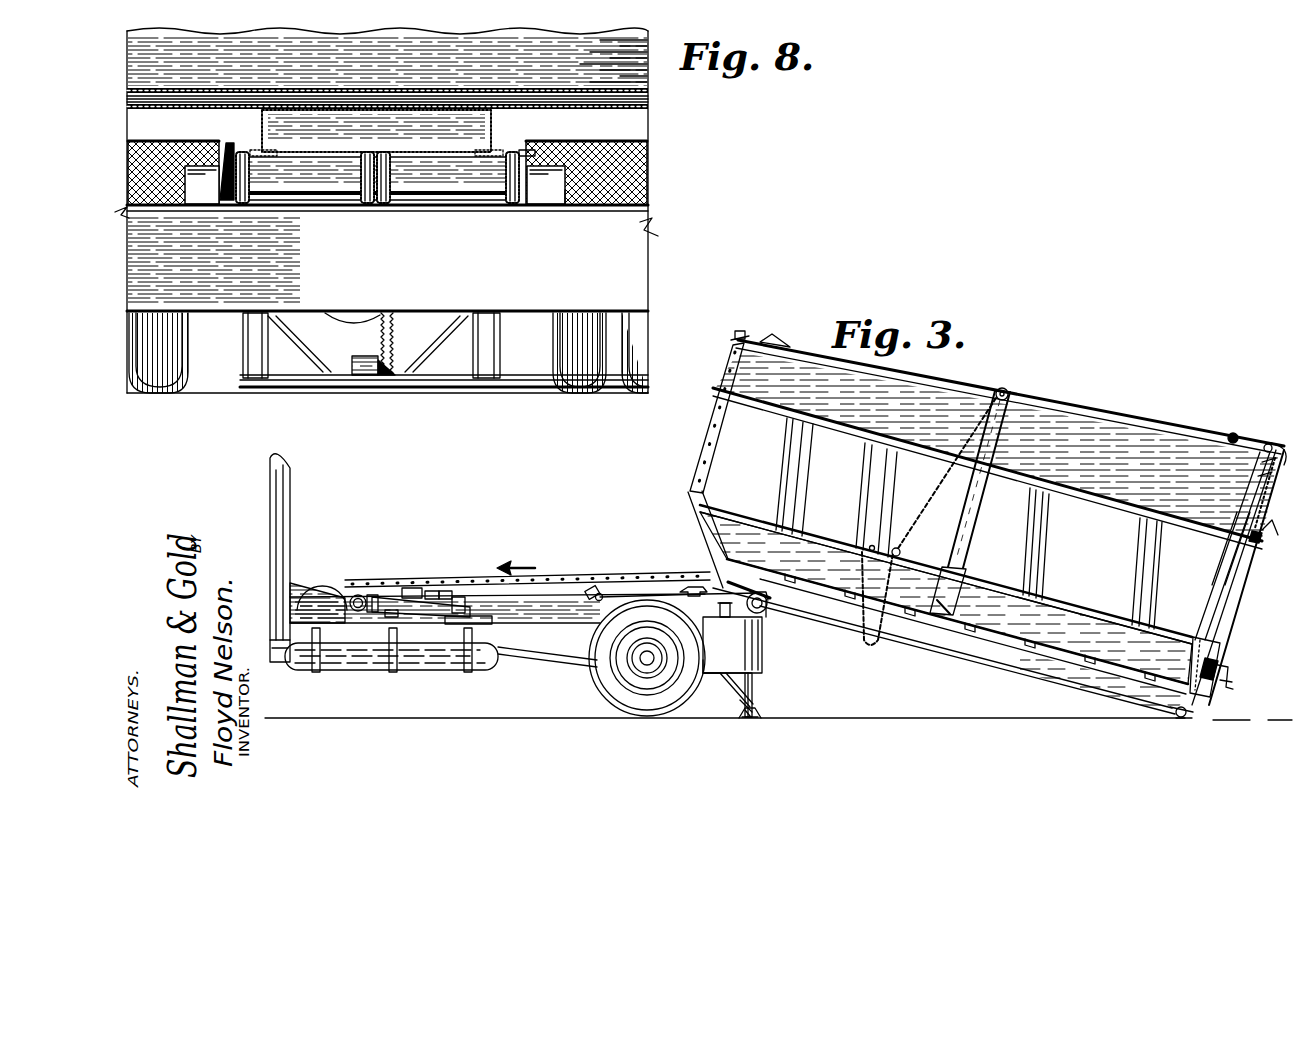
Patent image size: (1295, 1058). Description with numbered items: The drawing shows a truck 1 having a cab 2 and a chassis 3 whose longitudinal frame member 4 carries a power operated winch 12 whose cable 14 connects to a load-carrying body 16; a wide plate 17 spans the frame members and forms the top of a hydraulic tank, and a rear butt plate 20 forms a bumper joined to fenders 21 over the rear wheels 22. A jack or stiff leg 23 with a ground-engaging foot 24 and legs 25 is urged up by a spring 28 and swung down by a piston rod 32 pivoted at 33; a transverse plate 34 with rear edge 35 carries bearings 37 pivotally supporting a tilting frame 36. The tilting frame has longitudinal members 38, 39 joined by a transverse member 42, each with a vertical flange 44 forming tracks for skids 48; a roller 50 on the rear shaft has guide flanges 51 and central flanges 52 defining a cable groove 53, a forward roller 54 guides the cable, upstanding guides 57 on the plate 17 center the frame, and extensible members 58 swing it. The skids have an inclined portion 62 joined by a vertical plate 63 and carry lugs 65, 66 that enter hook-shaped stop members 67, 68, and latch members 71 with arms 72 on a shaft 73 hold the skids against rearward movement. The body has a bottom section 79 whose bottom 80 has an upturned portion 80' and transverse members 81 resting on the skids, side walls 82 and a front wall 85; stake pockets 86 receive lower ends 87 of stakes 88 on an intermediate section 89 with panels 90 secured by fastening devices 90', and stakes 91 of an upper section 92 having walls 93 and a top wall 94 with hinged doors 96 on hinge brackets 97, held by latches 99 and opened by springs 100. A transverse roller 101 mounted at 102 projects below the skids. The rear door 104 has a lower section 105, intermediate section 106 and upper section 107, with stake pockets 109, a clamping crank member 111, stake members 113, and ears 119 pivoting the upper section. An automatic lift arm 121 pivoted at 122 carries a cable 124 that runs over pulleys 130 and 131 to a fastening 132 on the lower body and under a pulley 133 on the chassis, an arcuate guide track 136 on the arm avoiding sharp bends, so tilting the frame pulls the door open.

In FIG. 3, the vehicle 1 is at (285, 670).
In FIG. 3, the cab 2 is at (280, 462).
In FIG. 8, the chassis 3 is at (193, 315).
In FIG. 3, the chassis 3 is at (707, 677).
In FIG. 3, the longitudinal frame member 4 is at (543, 637).
In FIG. 3, the power operated winch 12 is at (297, 583).
In FIG. 3, the cable 14 is at (632, 573).
In FIG. 8, the load-carrying body 16 is at (645, 88).
In FIG. 3, the load-carrying body 16 is at (723, 387).
In FIG. 3, the plate 17 is at (495, 617).
In FIG. 8, the butt plate 20 is at (632, 264).
In FIG. 3, the butt plate 20 is at (763, 656).
In FIG. 8, the fender 21 is at (645, 143).
In FIG. 3, the fender 21 is at (720, 670).
In FIG. 8, the rear wheel 22 is at (640, 361).
In FIG. 3, the rear wheel 22 is at (600, 673).
In FIG. 8, the jack or stiff leg 23 is at (500, 381).
In FIG. 3, the jack or stiff leg 23 is at (757, 707).
In FIG. 8, the ground-engaging foot 24 is at (472, 394).
In FIG. 3, the ground-engaging foot 24 is at (752, 720).
In FIG. 8, the upwardly extending leg 25 is at (493, 353).
In FIG. 3, the upwardly extending leg 25 is at (752, 693).
In FIG. 8, the spring 28 is at (397, 334).
In FIG. 3, the spring 28 is at (743, 705).
In FIG. 8, the piston rod 32 is at (367, 334).
In FIG. 3, the piston rod 32 is at (727, 675).
In FIG. 3, the pivotal connection 33 is at (748, 713).
In FIG. 8, the transverse plate 34 is at (648, 202).
In FIG. 3, the transverse plate 34 is at (740, 620).
In FIG. 8, the rear edge 35 is at (600, 183).
In FIG. 3, the rear edge 35 is at (763, 610).
In FIG. 8, the tilting frame 36 is at (508, 152).
In FIG. 3, the tilting frame 36 is at (583, 597).
In FIG. 8, the bearing 37 is at (543, 186).
In FIG. 3, the bearing 37 is at (763, 632).
In FIG. 8, the longitudinal member 38 is at (233, 160).
In FIG. 3, the longitudinal member 38 is at (485, 597).
In FIG. 8, the longitudinal member 39 is at (532, 152).
In FIG. 3, the transverse member 42 is at (387, 614).
In FIG. 3, the flange 44 is at (548, 600).
In FIG. 8, the skid 48 is at (267, 118).
In FIG. 3, the skid 48 is at (980, 647).
In FIG. 8, the roller 50 is at (445, 180).
In FIG. 3, the roller 50 is at (780, 572).
In FIG. 8, the guide flange 51 is at (257, 202).
In FIG. 8, the flange 52 is at (357, 202).
In FIG. 8, the cable groove 53 is at (379, 202).
In FIG. 3, the roller 54 is at (362, 596).
In FIG. 3, the upstanding guide 57 is at (452, 617).
In FIG. 3, the extensible member 58 is at (503, 653).
In FIG. 3, the upwardly inclined portion 62 is at (693, 533).
In FIG. 3, the transverse vertical plate 63 is at (686, 500).
In FIG. 3, the lug 65 is at (757, 592).
In FIG. 3, the lug 66 is at (1003, 662).
In FIG. 3, the hook-shaped stop member 67 is at (408, 590).
In FIG. 3, the hook-shaped stop member 68 is at (690, 587).
In FIG. 3, the latch member 71 is at (432, 588).
In FIG. 3, the arm 72 is at (448, 593).
In FIG. 3, the shaft 73 is at (490, 603).
In FIG. 8, the bottom section 79 is at (410, 92).
In FIG. 3, the bottom section 79 is at (1120, 670).
In FIG. 8, the bottom 80 is at (387, 63).
In FIG. 3, the upturned portion 80' is at (946, 582).
In FIG. 8, the transverse member 81 is at (603, 110).
In FIG. 3, the transverse member 81 is at (907, 610).
In FIG. 3, the side wall 82 is at (817, 543).
In FIG. 8, the front wall 85 is at (645, 70).
In FIG. 3, the tubular member 86 is at (955, 607).
In FIG. 3, the lower downwardly extending end 87 is at (1207, 637).
In FIG. 3, the stake 88 is at (965, 540).
In FIG. 3, the removable intermediate body section 89 is at (1152, 523).
In FIG. 3, the side wall and front wall panel 90 is at (987, 468).
In FIG. 3, the fastening device 90' is at (946, 574).
In FIG. 3, the stake 91 is at (1237, 517).
In FIG. 3, the upper body section 92 is at (903, 383).
In FIG. 3, the side and front wall 93 is at (1103, 428).
In FIG. 3, the top wall 94 is at (990, 382).
In FIG. 3, the hinged door 96 is at (1173, 428).
In FIG. 3, the hinge bracket 97 is at (772, 331).
In FIG. 3, the latch 99 is at (1237, 440).
In FIG. 3, the spring 100 is at (758, 330).
In FIG. 3, the transverse roller 101 is at (1182, 720).
In FIG. 3, the rotatable mounting 102 is at (1190, 713).
In FIG. 3, the door 104 is at (1237, 610).
In FIG. 3, the lower section 105 is at (1220, 660).
In FIG. 3, the intermediate section 106 is at (1243, 590).
In FIG. 3, the upper section 107 is at (1272, 505).
In FIG. 3, the tubular stake pocket 109 is at (1220, 650).
In FIG. 3, the crank member 111 is at (1228, 680).
In FIG. 3, the stake member 113 is at (1250, 567).
In FIG. 3, the upwardly extending ear 119 is at (1270, 440).
In FIG. 3, the arm 121 is at (1258, 476).
In FIG. 3, the pivotal mounting 122 is at (1262, 462).
In FIG. 3, the cable 124 is at (857, 647).
In FIG. 3, the pulley 130 is at (1010, 403).
In FIG. 3, the pulley 131 is at (899, 553).
In FIG. 3, the cable fastening 132 is at (868, 552).
In FIG. 3, the pulley 133 is at (590, 595).
In FIG. 3, the arcuate guide track 136 is at (1260, 540).